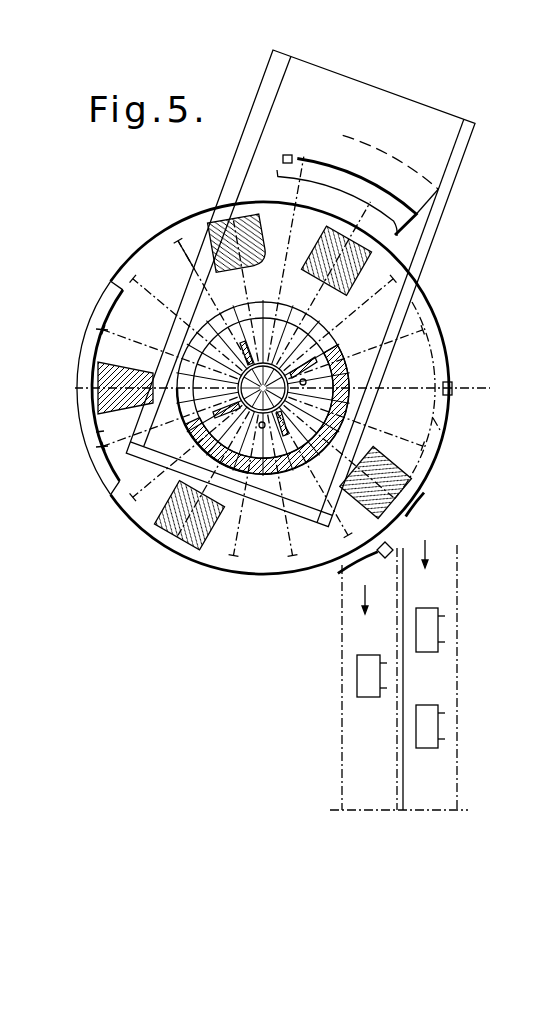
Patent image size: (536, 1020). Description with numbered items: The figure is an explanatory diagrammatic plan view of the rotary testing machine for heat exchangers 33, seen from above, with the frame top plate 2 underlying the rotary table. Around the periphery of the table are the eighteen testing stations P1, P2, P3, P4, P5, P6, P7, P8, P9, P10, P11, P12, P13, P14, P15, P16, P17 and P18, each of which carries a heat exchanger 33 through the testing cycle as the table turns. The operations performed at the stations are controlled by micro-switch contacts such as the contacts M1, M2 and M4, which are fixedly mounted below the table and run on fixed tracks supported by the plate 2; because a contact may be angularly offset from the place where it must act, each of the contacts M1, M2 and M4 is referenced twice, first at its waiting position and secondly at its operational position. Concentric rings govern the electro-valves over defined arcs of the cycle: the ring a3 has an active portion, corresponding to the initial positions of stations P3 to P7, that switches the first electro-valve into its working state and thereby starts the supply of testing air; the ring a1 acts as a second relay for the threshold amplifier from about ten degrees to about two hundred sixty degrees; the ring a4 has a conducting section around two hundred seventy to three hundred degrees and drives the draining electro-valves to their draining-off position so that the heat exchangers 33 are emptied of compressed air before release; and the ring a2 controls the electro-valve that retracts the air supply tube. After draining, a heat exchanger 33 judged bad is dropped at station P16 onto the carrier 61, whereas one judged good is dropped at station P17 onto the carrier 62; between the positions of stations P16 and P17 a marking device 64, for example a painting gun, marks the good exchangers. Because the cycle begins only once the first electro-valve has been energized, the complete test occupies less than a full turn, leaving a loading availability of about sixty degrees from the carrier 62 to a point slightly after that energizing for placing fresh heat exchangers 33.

The plate 2 is at (462, 246).
The heat exchanger 33 is at (370, 693).
The carrier 61 is at (450, 628).
The carrier 62 is at (342, 748).
The marking device 64 is at (392, 556).
The ring a1 is at (462, 395).
The ring a2 is at (432, 538).
The ring a3 is at (98, 432).
The ring a4 is at (446, 440).
The contact M1 is at (286, 155).
The contact M2 is at (344, 142).
The contact M4 is at (340, 192).
The testing station P1 is at (238, 540).
The testing station P2 is at (213, 474).
The testing station P3 is at (140, 496).
The testing station P4 is at (171, 439).
The testing station P5 is at (155, 388).
The testing station P6 is at (171, 354).
The testing station P7 is at (188, 325).
The testing station P8 is at (208, 302).
The testing station P9 is at (246, 290).
The testing station P10 is at (313, 160).
The testing station P11 is at (380, 178).
The testing station P12 is at (370, 312).
The testing station P13 is at (406, 348).
The testing station P14 is at (390, 405).
The testing station P15 is at (356, 426).
The testing station P16 is at (339, 451).
The testing station P17 is at (319, 473).
The testing station P18 is at (296, 540).